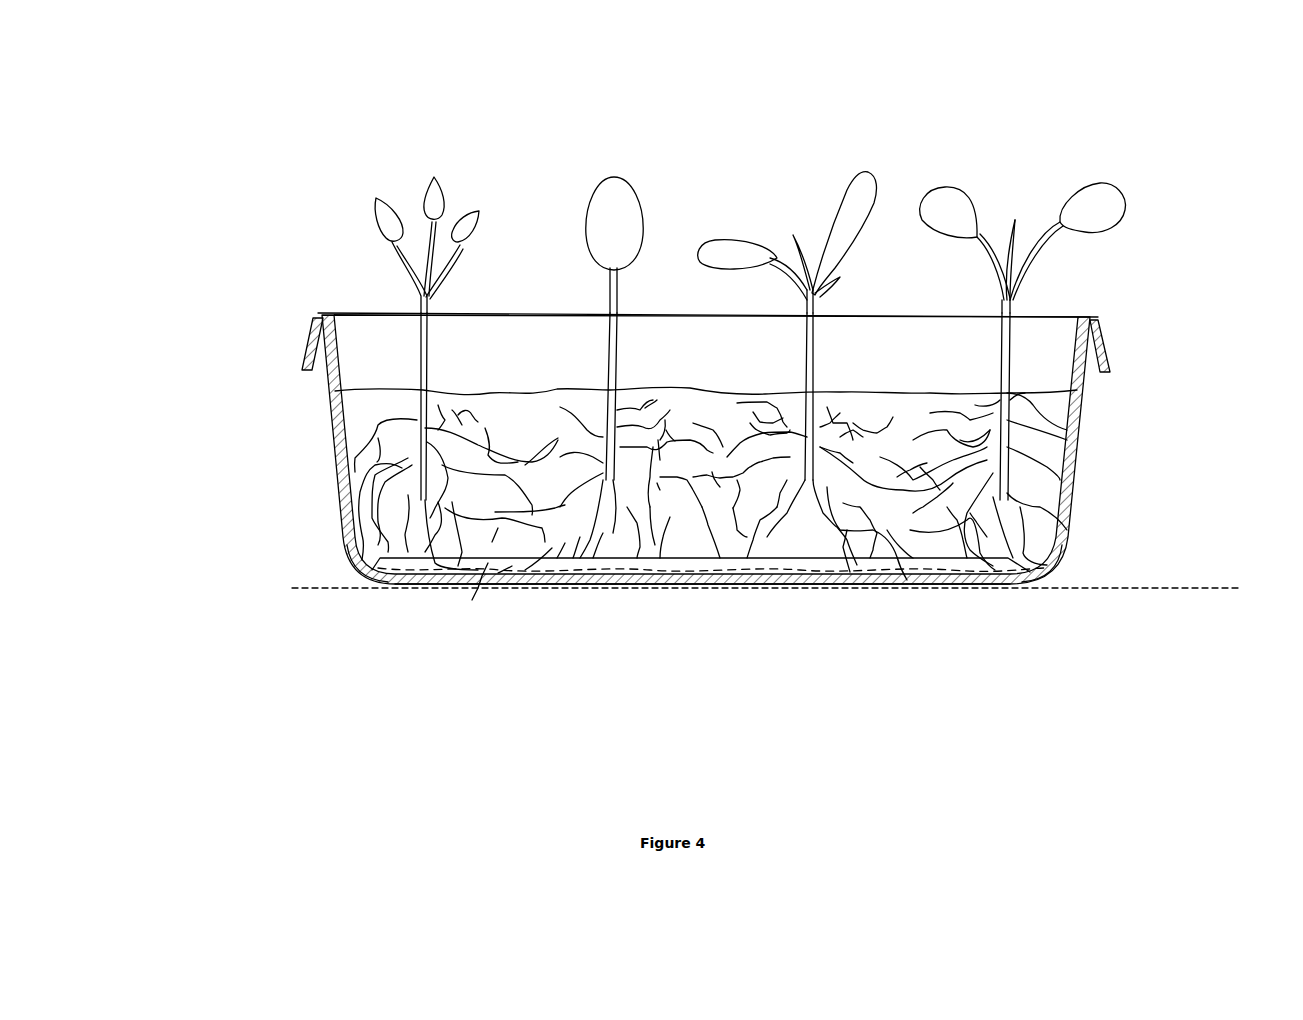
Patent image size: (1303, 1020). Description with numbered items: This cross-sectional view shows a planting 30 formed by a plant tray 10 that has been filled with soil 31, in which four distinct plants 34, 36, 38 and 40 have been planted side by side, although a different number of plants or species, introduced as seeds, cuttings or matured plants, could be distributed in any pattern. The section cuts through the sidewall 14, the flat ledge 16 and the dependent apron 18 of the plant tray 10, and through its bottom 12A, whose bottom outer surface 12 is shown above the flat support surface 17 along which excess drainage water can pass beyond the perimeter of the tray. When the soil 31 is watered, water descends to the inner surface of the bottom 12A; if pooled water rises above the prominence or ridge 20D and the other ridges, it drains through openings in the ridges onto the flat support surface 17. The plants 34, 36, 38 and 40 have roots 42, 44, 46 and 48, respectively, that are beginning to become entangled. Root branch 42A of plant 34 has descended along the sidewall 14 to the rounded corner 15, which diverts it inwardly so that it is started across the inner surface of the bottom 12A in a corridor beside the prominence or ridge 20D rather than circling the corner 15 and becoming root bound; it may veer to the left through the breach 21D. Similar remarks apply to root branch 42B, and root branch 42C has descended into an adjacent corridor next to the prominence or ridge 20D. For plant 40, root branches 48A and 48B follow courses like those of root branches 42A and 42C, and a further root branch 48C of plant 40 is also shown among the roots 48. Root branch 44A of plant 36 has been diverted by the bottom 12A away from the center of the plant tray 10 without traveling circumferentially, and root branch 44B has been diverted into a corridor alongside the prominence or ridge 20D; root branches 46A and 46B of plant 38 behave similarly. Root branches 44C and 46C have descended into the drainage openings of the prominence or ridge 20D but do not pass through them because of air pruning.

The planting 30 is at (380, 103).
The plant 34 is at (383, 186).
The plant 36 is at (566, 186).
The plant 38 is at (796, 178).
The plant 40 is at (1056, 181).
The flat ledge 16 is at (323, 311).
The dependent apron 18 is at (305, 347).
The soil 31 is at (373, 410).
The sidewall 14 is at (338, 468).
The plant tray 10 is at (338, 527).
The roots 42 is at (442, 421).
The roots 44 is at (638, 405).
The roots 46 is at (822, 421).
The roots 48 is at (1016, 398).
The root branch 42A is at (356, 533).
The root branch 42B is at (367, 530).
The root branch 42C is at (367, 547).
The root branch 44A is at (655, 545).
The root branch 44B is at (593, 558).
The root branch 44C is at (557, 558).
The root branch 46A is at (873, 623).
The root branch 46B is at (890, 540).
The root branch 46C is at (770, 558).
The root branch 48A is at (1040, 410).
The root branch 48B is at (1045, 460).
The root branch 48C is at (1047, 533).
The prominence or ridge 20D is at (372, 576).
The breach 21D is at (480, 582).
The bottom outer surface 12 is at (745, 590).
The bottom 12A is at (957, 582).
The corner 15 is at (1066, 575).
The flat support surface 17 is at (1092, 591).